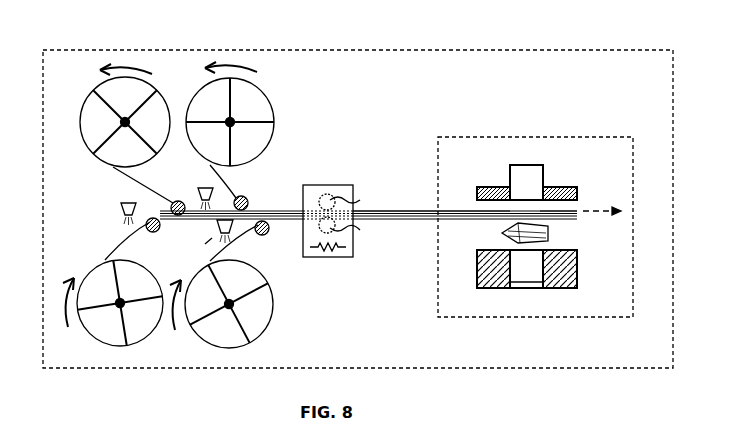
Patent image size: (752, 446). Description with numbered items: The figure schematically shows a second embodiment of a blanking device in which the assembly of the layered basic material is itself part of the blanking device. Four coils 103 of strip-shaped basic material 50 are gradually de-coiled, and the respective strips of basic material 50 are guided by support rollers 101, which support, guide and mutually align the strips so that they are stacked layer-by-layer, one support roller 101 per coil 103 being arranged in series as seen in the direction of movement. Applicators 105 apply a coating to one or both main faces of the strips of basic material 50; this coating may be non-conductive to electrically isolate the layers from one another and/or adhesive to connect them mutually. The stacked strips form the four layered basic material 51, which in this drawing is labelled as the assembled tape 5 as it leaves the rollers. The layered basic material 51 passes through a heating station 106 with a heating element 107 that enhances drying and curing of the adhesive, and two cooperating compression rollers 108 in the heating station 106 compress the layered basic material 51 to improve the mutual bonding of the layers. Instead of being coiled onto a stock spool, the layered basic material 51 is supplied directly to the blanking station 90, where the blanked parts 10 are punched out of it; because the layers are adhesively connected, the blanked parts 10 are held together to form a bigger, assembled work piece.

The coil 103 is at (92, 110).
The strip-shaped basic material 50 is at (114, 172).
The bonded tape assembly 5 is at (213, 254).
The applicator 105 is at (119, 208).
The support roller 101 is at (172, 202).
The heating station 106 is at (330, 185).
The compression roller 108 is at (358, 200).
The heating element 107 is at (331, 257).
The four layered basic material 51 is at (408, 210).
The blanking station 90 is at (523, 137).
The blanked part 10 is at (503, 233).